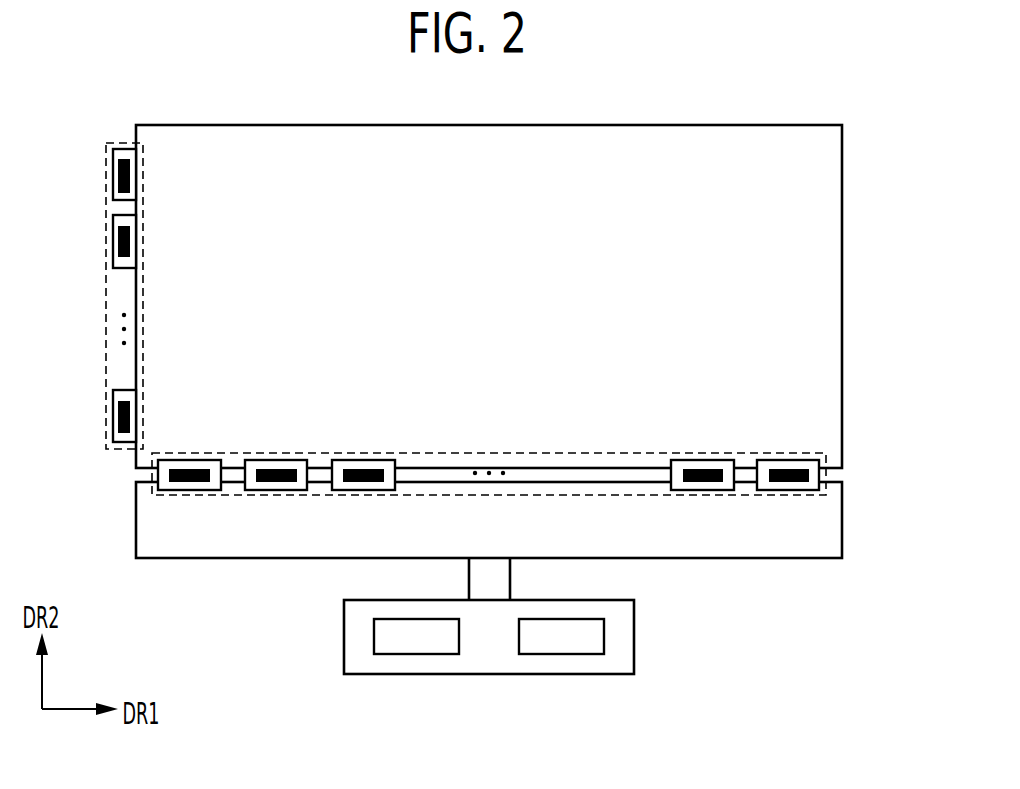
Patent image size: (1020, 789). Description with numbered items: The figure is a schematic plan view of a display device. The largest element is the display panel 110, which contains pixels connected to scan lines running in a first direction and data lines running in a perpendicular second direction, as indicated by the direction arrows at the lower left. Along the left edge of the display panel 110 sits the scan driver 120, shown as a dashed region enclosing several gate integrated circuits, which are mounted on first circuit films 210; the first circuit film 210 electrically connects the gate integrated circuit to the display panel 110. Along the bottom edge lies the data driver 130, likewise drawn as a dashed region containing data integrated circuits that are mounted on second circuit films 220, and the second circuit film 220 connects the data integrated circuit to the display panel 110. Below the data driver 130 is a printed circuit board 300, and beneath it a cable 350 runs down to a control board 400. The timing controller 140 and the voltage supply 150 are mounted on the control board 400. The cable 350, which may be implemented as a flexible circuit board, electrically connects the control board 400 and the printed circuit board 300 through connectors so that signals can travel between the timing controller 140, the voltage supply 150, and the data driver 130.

The display panel 110 is at (842, 293).
The scan driver 120 is at (106, 287).
The first circuit film 210 is at (113, 197).
The data driver 130 is at (756, 495).
The second circuit film 220 is at (808, 490).
The printed circuit board 300 is at (202, 560).
The cable 350 is at (510, 582).
The control board 400 is at (634, 637).
The timing controller 140 is at (417, 654).
The voltage supply 150 is at (563, 654).